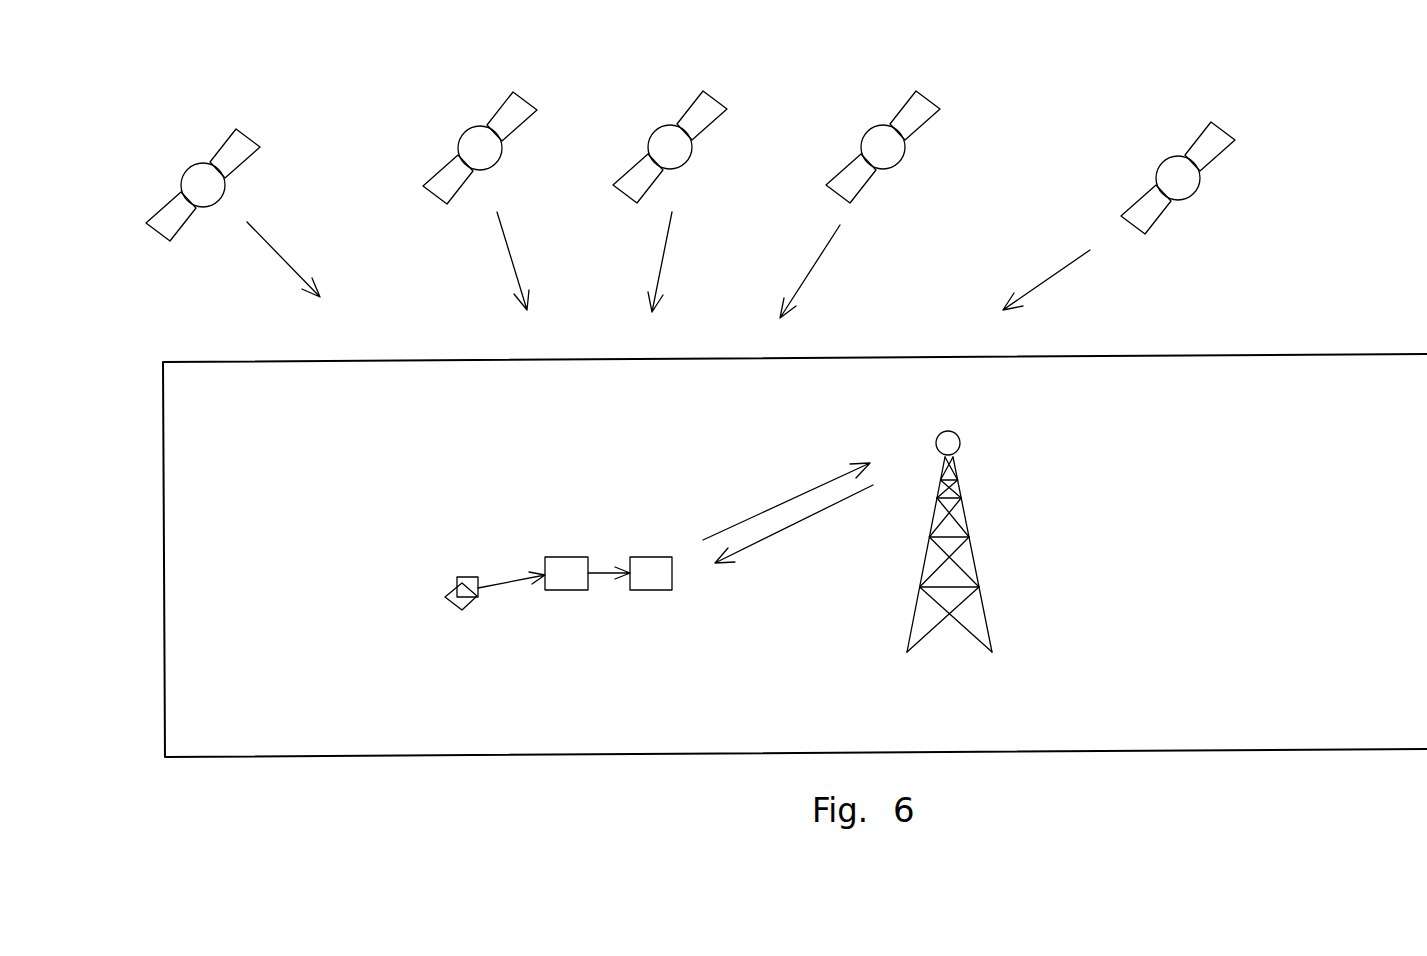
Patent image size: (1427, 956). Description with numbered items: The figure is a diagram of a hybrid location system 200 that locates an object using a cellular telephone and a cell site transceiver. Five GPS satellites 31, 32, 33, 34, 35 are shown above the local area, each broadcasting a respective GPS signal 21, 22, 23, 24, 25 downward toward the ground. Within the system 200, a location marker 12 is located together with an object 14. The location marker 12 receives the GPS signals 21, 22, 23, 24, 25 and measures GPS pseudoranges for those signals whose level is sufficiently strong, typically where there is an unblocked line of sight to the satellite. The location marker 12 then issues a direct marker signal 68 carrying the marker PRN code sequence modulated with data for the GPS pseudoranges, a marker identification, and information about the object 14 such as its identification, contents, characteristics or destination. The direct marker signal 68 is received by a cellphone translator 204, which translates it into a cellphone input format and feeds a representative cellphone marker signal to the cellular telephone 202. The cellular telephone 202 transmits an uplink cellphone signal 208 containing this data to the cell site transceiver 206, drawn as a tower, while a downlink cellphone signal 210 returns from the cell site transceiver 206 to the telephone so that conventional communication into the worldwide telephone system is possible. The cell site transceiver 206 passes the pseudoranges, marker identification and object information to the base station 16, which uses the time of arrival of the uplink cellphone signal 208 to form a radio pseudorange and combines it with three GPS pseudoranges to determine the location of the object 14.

The GPS satellite 31 is at (185, 172).
The GPS satellite 32 is at (460, 135).
The GPS satellite 33 is at (652, 135).
The GPS satellite 34 is at (863, 133).
The GPS satellite 35 is at (1162, 167).
The GPS signal 21 is at (275, 255).
The GPS signal 22 is at (508, 257).
The GPS signal 23 is at (662, 253).
The GPS signal 24 is at (820, 260).
The GPS signal 25 is at (1050, 278).
The hybrid location system 200 is at (365, 756).
The object 14 is at (452, 590).
The location marker 12 is at (472, 578).
The direct marker signal 68 is at (505, 585).
The cellphone translator 204 is at (570, 557).
The cellular telephone 202 is at (653, 557).
The uplink cellphone signal 208 is at (755, 513).
The downlink cellphone signal 210 is at (792, 527).
The cell site transceiver 206 is at (992, 541).
The base station 16 is at (960, 443).